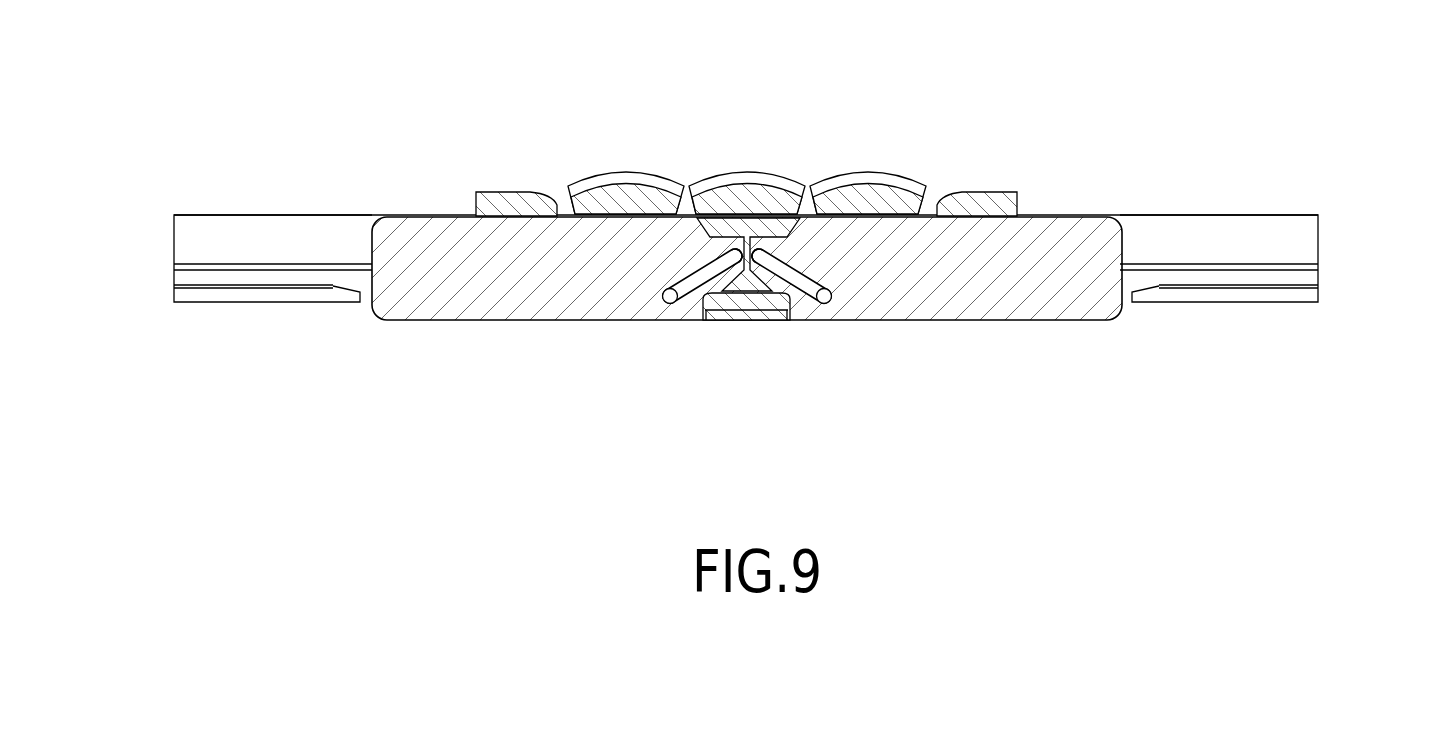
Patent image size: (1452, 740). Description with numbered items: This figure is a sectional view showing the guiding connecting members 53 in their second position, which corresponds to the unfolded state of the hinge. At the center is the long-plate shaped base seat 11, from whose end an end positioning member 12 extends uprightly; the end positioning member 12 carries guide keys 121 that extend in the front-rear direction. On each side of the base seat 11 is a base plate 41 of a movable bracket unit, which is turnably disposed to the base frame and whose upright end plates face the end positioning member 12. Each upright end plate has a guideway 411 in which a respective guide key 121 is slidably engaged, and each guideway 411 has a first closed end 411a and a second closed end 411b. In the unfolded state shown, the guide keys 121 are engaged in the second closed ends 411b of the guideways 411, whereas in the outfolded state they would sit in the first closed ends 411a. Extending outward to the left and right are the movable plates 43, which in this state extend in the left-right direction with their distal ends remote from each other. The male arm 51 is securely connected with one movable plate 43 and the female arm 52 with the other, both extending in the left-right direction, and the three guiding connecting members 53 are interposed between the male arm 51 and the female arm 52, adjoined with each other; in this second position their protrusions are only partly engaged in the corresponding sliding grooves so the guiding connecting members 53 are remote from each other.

The base seat 11 is at (745, 316).
The end positioning member 12 is at (752, 224).
The guide key 121 is at (671, 298).
The base plate 41 is at (432, 320).
The guideway 411 is at (690, 283).
The first closed end 411a is at (735, 258).
The second closed end 411b is at (664, 303).
The movable plate 43 is at (174, 273).
The male arm 51 is at (243, 215).
The female arm 52 is at (1232, 215).
The guiding connecting member 53 is at (830, 177).